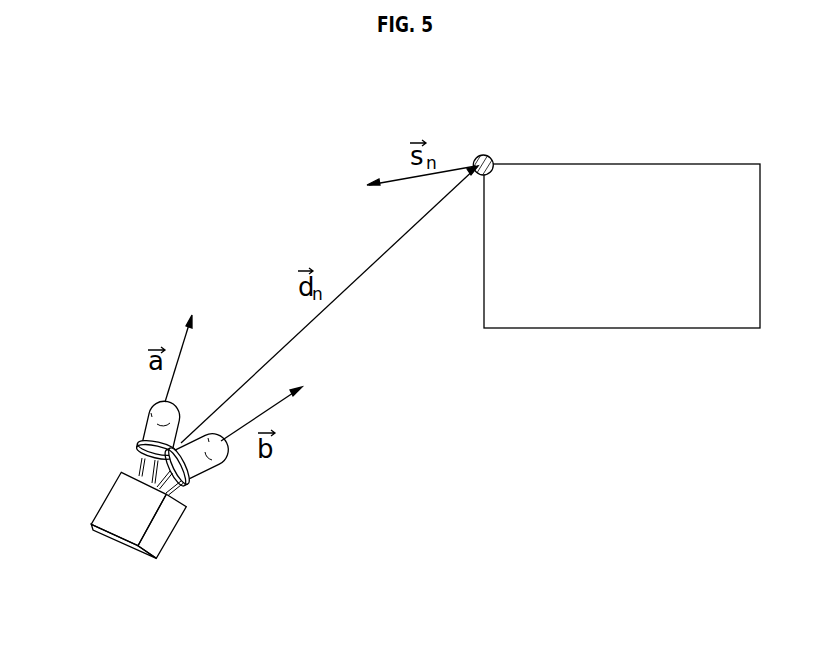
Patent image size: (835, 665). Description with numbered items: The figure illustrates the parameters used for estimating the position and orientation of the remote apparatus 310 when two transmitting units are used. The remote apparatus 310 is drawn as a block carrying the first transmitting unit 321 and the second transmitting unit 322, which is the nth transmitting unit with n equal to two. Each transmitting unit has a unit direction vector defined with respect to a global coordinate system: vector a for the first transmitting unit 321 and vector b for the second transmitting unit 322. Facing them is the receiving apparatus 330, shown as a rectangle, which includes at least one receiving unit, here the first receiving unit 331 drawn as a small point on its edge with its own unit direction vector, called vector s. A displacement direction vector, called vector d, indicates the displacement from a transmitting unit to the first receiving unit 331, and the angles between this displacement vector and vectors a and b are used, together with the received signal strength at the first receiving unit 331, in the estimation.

The remote apparatus 310 is at (176, 540).
The first transmitting unit 321 is at (138, 422).
The second transmitting unit 322 is at (210, 473).
The receiving apparatus 330 is at (618, 146).
The first receiving unit 331 is at (483, 155).